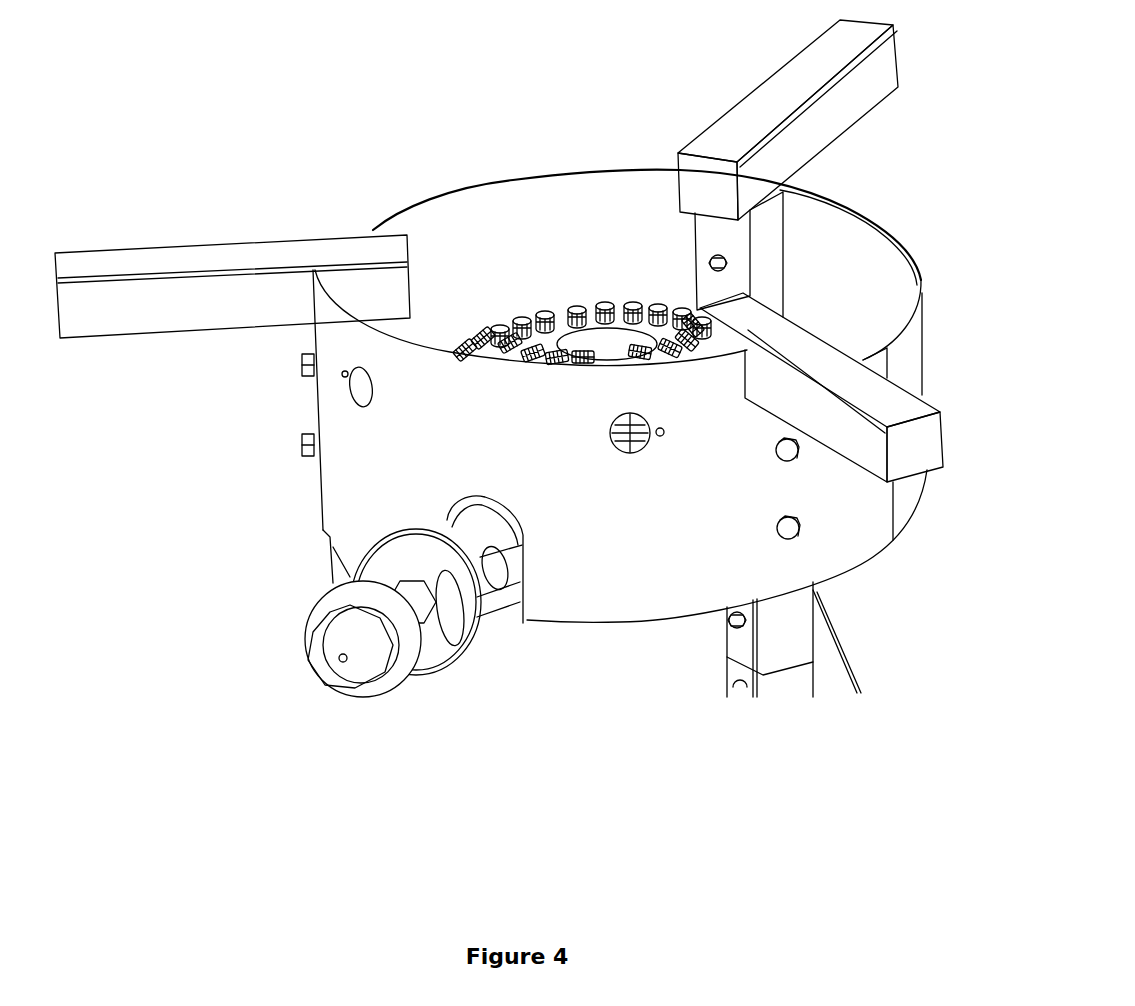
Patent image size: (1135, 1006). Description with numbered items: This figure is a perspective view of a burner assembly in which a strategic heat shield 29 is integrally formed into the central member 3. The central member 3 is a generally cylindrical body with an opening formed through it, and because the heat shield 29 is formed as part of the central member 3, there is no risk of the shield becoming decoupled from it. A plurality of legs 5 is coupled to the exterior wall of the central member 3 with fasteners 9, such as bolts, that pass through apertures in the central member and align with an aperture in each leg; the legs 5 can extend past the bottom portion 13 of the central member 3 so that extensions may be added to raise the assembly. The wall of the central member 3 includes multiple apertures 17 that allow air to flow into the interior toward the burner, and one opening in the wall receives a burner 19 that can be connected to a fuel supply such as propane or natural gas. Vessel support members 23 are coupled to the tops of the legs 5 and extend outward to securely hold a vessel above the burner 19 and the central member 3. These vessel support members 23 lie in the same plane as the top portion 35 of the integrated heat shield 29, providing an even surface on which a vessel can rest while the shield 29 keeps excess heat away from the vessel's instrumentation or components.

The central member 3 is at (633, 627).
The legs 5 is at (794, 639).
The fasteners 9 is at (787, 455).
The bottom portion 13 is at (540, 617).
The apertures 17 is at (357, 370).
The burner 19 is at (433, 647).
The vessel support members 23 is at (499, 251).
The strategic heat shield 29 is at (506, 379).
The top portion 35 is at (437, 343).